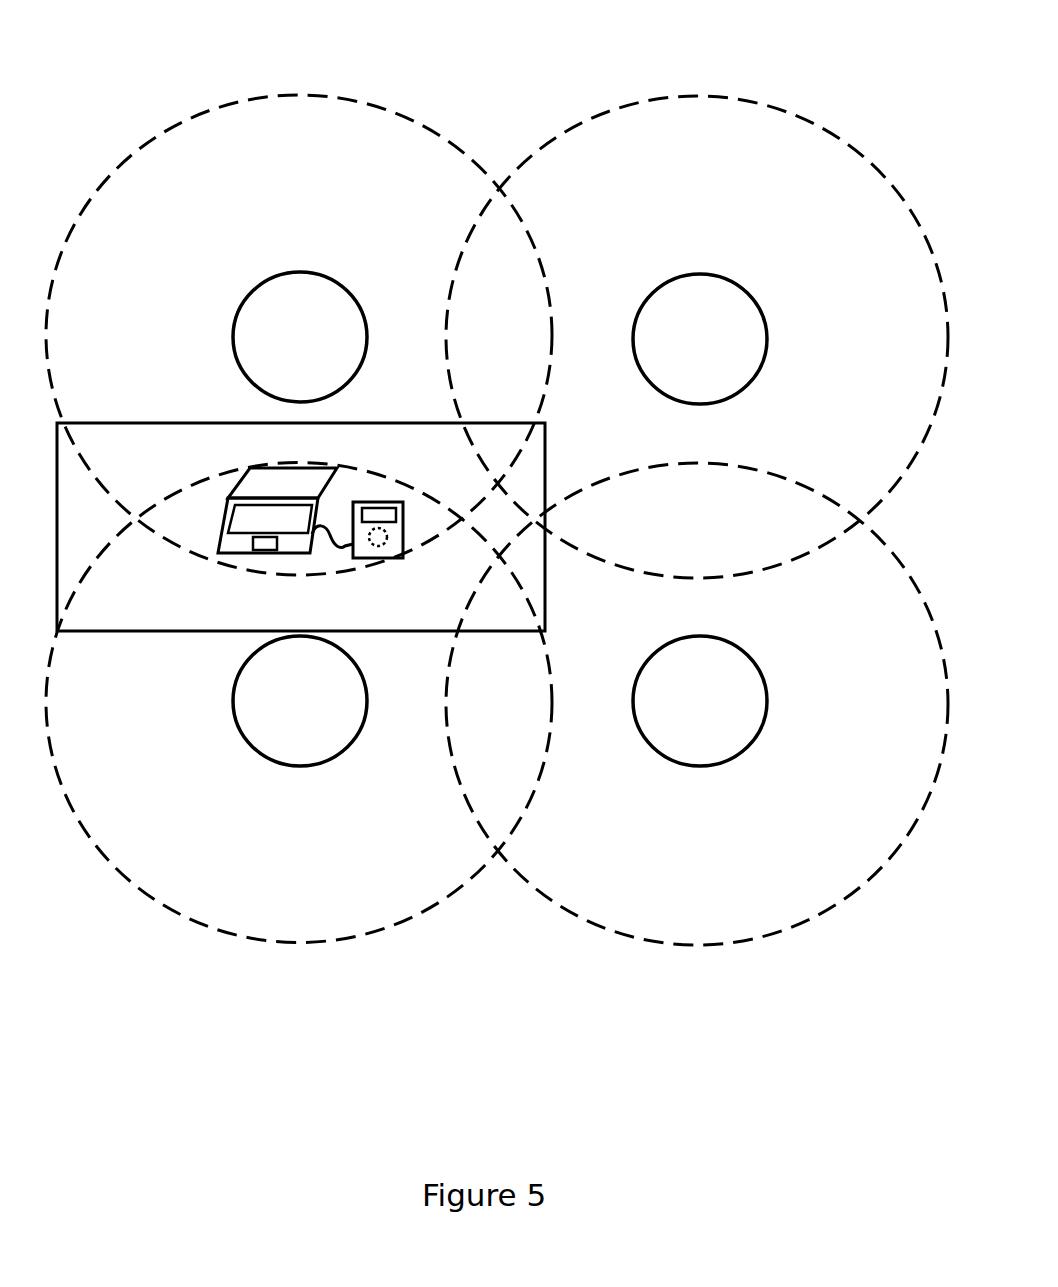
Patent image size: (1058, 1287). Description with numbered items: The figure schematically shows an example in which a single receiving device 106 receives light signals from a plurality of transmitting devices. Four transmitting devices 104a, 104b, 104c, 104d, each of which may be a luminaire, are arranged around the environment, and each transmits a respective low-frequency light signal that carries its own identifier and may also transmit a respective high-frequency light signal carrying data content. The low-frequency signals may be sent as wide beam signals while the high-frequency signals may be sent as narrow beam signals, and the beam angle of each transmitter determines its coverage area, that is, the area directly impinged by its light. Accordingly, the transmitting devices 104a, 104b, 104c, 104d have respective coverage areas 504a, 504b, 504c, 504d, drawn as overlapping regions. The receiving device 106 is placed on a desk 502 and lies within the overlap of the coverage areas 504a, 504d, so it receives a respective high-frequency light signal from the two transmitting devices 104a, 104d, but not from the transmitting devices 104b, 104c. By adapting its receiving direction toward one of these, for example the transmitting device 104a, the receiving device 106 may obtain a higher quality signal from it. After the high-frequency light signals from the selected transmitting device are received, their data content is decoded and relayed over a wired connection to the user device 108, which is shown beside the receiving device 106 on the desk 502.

The desk 502 is at (115, 631).
The coverage area 504a is at (213, 110).
The coverage area 504b is at (733, 98).
The coverage area 504c is at (683, 945).
The coverage area 504d is at (260, 942).
The transmitting device 104a is at (297, 273).
The transmitting device 104b is at (688, 275).
The transmitting device 104c is at (683, 766).
The transmitting device 104d is at (283, 766).
The receiving device 106 is at (372, 558).
The user device 108 is at (218, 553).